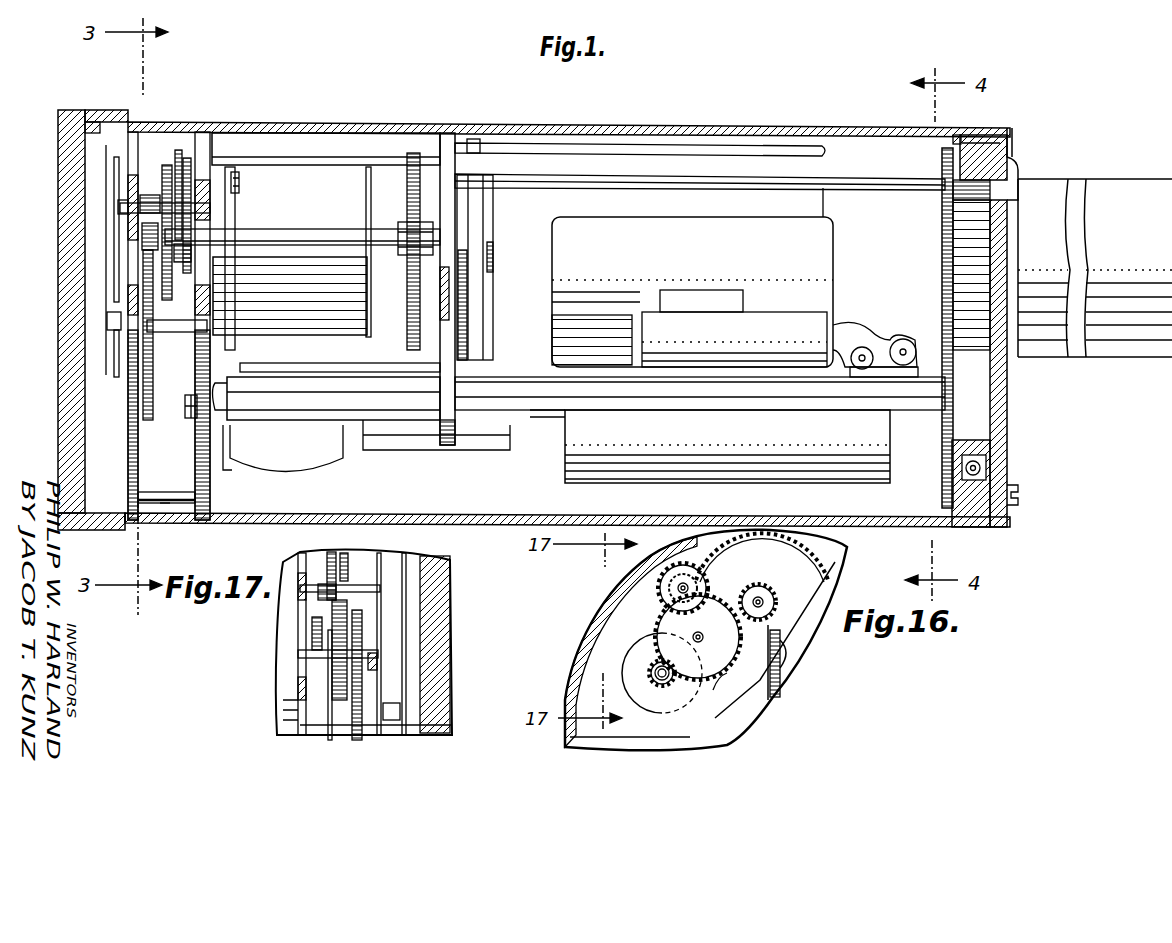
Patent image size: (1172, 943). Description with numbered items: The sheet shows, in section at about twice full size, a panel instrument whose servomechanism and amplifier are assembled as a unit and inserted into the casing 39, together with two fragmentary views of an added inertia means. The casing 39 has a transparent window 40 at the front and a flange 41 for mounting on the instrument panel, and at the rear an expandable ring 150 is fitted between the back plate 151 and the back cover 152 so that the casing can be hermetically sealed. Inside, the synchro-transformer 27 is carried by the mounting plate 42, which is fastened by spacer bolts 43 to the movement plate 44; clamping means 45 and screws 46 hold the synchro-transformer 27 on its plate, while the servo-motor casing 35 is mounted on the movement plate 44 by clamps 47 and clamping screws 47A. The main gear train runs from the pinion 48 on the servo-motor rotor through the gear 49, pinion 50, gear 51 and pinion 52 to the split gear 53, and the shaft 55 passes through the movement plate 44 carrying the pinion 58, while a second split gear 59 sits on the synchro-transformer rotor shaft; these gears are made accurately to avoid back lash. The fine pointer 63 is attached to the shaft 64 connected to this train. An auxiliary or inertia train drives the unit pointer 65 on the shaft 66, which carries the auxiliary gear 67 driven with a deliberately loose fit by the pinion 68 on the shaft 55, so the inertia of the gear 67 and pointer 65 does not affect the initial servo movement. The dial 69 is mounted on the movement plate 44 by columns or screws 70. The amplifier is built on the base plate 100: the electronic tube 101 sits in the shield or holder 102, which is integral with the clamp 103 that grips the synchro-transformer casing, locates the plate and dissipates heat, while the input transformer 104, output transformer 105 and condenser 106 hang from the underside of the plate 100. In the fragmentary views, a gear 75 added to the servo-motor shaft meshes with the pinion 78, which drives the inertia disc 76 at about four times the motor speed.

In FIG. 1, the synchro-transformer 27 is at (826, 200).
In FIG. 1, the servo-motor casing 35 is at (290, 330).
In FIG. 17, the servo-motor casing 35 is at (290, 684).
In FIG. 1, the casing 39 is at (804, 126).
In FIG. 1, the transparent window 40 is at (58, 416).
In FIG. 17, the transparent window 40 is at (447, 652).
In FIG. 1, the flange 41 is at (131, 119).
In FIG. 1, the mounting plate 42 is at (446, 133).
In FIG. 1, the spacer bolts 43 is at (294, 143).
In FIG. 1, the movement plate 44 is at (212, 500).
In FIG. 17, the movement plate 44 is at (300, 736).
In FIG. 1, the clamping means 45 is at (479, 140).
In FIG. 1, the screws 46 is at (492, 256).
In FIG. 1, the clamps 47 is at (240, 208).
In FIG. 1, the clamping screws 47A is at (240, 188).
In FIG. 1, the pinion 48 is at (190, 332).
In FIG. 17, the pinion 48 is at (312, 625).
In FIG. 1, the gear 49 is at (188, 158).
In FIG. 17, the gear 49 is at (318, 548).
In FIG. 16, the gear 49 is at (630, 578).
In FIG. 1, the pinion 50 is at (182, 182).
In FIG. 17, the pinion 50 is at (336, 590).
In FIG. 16, the pinion 50 is at (662, 610).
In FIG. 1, the gear 51 is at (178, 150).
In FIG. 16, the gear 51 is at (820, 560).
In FIG. 1, the pinion 52 is at (156, 195).
In FIG. 16, the pinion 52 is at (776, 590).
In FIG. 1, the split gear 53 is at (167, 164).
In FIG. 17, the split gear 53 is at (343, 555).
In FIG. 16, the split gear 53 is at (827, 573).
In FIG. 1, the shaft 55 is at (302, 230).
In FIG. 1, the pinion 58 is at (406, 257).
In FIG. 1, the second split gear 59 is at (414, 152).
In FIG. 1, the fine pointer 63 is at (115, 170).
In FIG. 17, the fine pointer 63 is at (392, 560).
In FIG. 1, the shaft 64 is at (120, 212).
In FIG. 1, the unit pointer 65 is at (108, 300).
In FIG. 17, the unit pointer 65 is at (407, 606).
In FIG. 16, the unit pointer 65 is at (775, 698).
In FIG. 1, the shaft 66 is at (118, 354).
In FIG. 1, the auxiliary gear 67 is at (148, 420).
In FIG. 17, the auxiliary gear 67 is at (378, 732).
In FIG. 16, the auxiliary gear 67 is at (718, 680).
In FIG. 1, the pinion 68 is at (143, 238).
In FIG. 17, the pinion 68 is at (378, 660).
In FIG. 1, the dial 69 is at (125, 516).
In FIG. 17, the dial 69 is at (430, 737).
In FIG. 1, the columns or screws 70 is at (165, 504).
In FIG. 17, the gear 75 is at (325, 653).
In FIG. 16, the gear 75 is at (640, 657).
In FIG. 17, the inertia disc 76 is at (330, 725).
In FIG. 16, the inertia disc 76 is at (625, 688).
In FIG. 17, the pinion 78 is at (357, 736).
In FIG. 16, the pinion 78 is at (655, 688).
In FIG. 1, the base plate 100 is at (893, 380).
In FIG. 1, the electronic tube 101 is at (866, 345).
In FIG. 1, the shield or holder 102 is at (828, 312).
In FIG. 1, the clamp 103 is at (833, 281).
In FIG. 1, the input transformer 104 is at (290, 462).
In FIG. 1, the output transformer 105 is at (506, 442).
In FIG. 1, the condenser 106 is at (565, 485).
In FIG. 1, the expandable ring 150 is at (960, 527).
In FIG. 1, the back plate 151 is at (945, 525).
In FIG. 1, the back cover 152 is at (1006, 416).